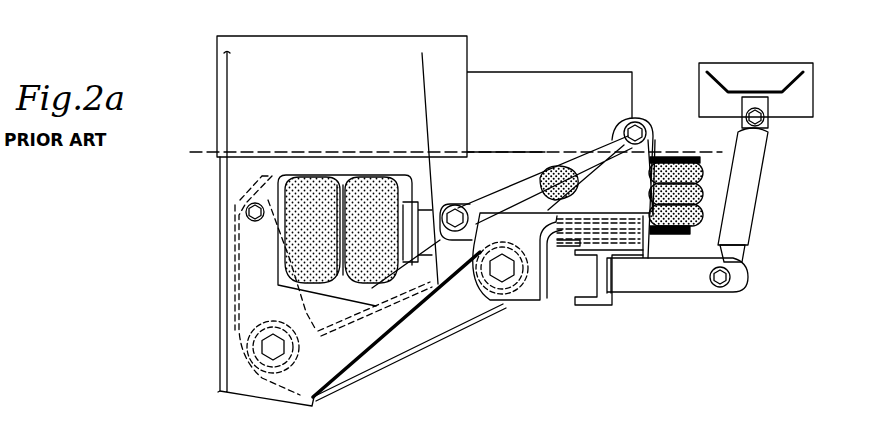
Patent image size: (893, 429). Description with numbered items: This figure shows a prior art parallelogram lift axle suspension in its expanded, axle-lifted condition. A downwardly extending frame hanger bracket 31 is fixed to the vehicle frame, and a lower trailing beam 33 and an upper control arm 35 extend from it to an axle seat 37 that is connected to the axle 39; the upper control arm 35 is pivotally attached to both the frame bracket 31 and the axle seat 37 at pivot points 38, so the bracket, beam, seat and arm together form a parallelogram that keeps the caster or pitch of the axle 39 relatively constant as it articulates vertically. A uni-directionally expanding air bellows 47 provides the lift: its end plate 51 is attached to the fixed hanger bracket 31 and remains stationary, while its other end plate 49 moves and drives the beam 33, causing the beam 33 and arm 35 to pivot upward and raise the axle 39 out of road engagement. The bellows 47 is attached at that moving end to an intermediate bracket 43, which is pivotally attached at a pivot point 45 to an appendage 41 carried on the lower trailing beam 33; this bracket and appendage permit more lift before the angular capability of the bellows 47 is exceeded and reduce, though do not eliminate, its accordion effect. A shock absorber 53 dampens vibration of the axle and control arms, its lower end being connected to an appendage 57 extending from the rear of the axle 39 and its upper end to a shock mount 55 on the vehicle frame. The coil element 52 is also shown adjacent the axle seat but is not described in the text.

The frame hanger bracket 31 is at (378, 58).
The lower trailing beam 33 is at (430, 328).
The upper control arm 35 is at (508, 190).
The axle seat 37 is at (585, 195).
The pivot points 38 is at (630, 131).
The axle 39 is at (608, 300).
The appendage 41 is at (245, 302).
The intermediate bracket 43 is at (252, 195).
The pivot point 45 is at (246, 212).
The air bellows 47 is at (358, 190).
The end plate 49 is at (279, 190).
The end plate 51 is at (406, 196).
The spring 52 is at (690, 156).
The shock absorber 53 is at (745, 210).
The shock mount 55 is at (752, 70).
The appendage 57 is at (688, 286).